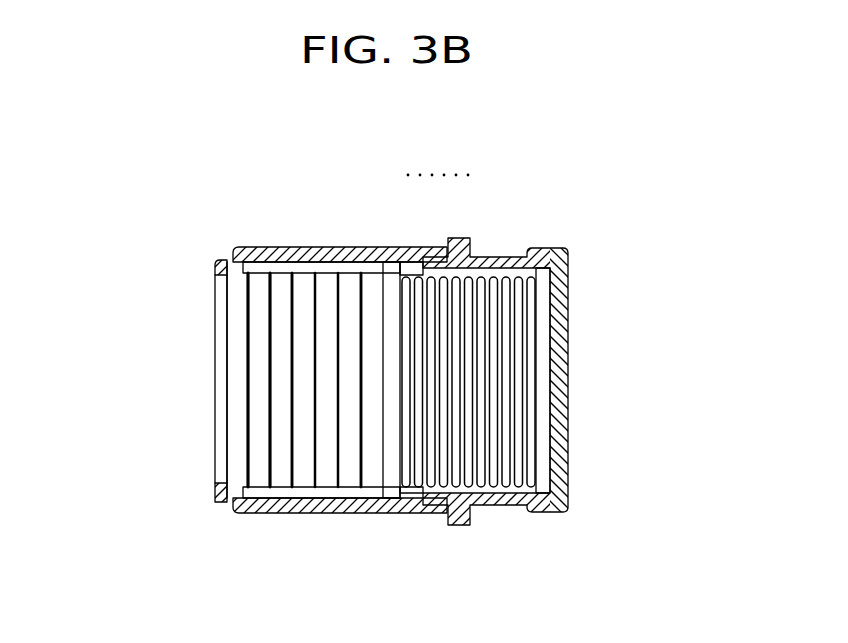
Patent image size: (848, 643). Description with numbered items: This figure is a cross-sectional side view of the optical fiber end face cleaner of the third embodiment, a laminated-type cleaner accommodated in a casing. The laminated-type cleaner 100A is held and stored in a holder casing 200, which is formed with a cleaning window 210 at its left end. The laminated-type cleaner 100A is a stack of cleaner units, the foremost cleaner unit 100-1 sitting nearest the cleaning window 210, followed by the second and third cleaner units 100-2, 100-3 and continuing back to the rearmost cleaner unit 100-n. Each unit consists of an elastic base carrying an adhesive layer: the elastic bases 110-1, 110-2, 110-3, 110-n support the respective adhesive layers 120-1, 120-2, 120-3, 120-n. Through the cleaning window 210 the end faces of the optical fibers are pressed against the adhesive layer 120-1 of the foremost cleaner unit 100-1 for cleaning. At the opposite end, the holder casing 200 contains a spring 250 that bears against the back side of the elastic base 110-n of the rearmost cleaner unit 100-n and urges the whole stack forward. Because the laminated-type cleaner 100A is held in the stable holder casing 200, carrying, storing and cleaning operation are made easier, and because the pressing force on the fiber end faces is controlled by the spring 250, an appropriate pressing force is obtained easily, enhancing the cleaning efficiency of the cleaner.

The laminated-type cleaner 100A is at (597, 158).
The foremost cleaner unit 100-1 is at (235, 284).
The cleaner unit 100-2 is at (260, 284).
The cleaner unit 100-3 is at (280, 284).
The rearmost cleaner unit 100-n is at (374, 284).
The elastic base 110-1 is at (237, 480).
The elastic base 110-2 is at (260, 480).
The elastic base 110-3 is at (282, 480).
The elastic base 110-n is at (373, 480).
The adhesive layer 120-1 is at (227, 395).
The adhesive layer 120-2 is at (250, 427).
The adhesive layer 120-3 is at (272, 462).
The adhesive layer 120-n is at (357, 458).
The holder casing 200 is at (492, 233).
The cleaning window 210 is at (213, 312).
The spring 250 is at (497, 390).